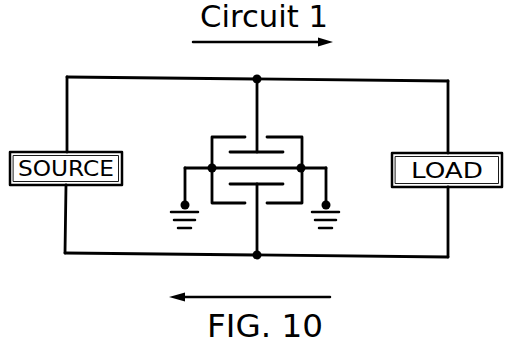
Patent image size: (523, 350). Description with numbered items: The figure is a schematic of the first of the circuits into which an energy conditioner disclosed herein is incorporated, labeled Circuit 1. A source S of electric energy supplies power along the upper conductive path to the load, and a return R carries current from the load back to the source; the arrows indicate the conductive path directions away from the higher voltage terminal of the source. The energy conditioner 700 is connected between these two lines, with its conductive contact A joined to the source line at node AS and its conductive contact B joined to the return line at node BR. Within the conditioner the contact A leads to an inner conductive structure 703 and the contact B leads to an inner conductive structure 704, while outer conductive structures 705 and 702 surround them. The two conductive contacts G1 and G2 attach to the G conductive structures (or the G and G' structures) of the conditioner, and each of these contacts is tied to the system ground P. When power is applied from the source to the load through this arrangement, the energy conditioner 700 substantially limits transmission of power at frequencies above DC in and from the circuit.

The switching device 700 is at (233, 167).
The right electrode 702 is at (295, 163).
The upper plate 703 is at (253, 146).
The lower plate 704 is at (250, 190).
The left electrode 705 is at (214, 134).
The source S is at (155, 75).
The return R is at (162, 257).
The supply node AS is at (262, 78).
The return node BR is at (262, 258).
The conductive contact G1 is at (198, 168).
The conductive contact G2 is at (322, 168).
The system ground P is at (171, 216).
The conductive contact A is at (267, 115).
The conductive contact B is at (266, 219).